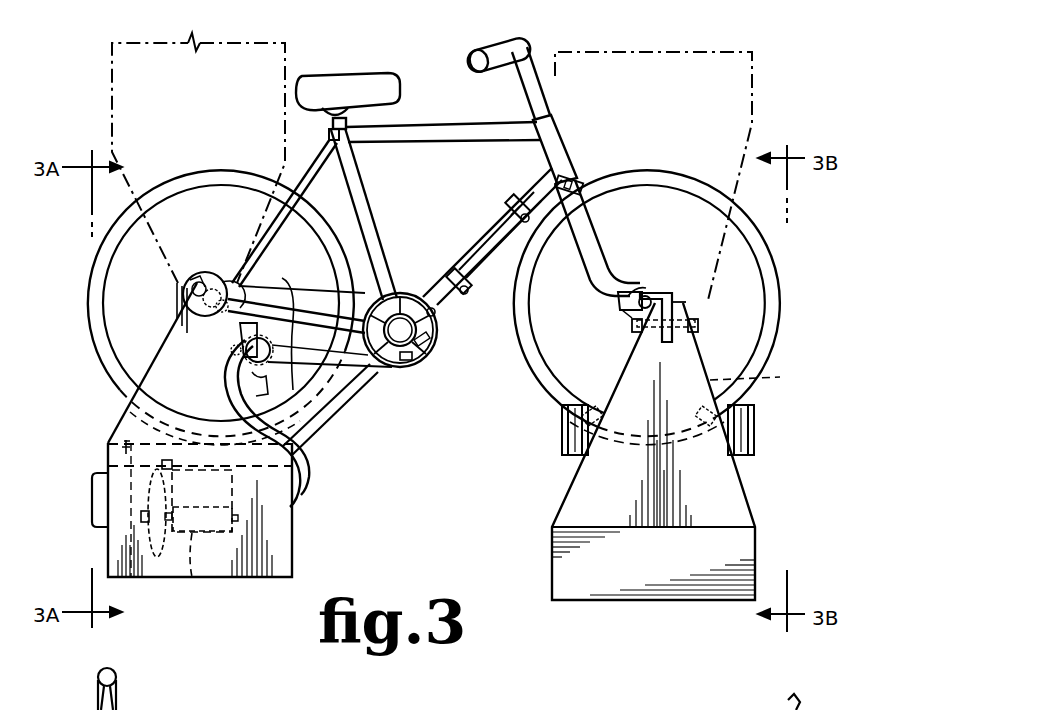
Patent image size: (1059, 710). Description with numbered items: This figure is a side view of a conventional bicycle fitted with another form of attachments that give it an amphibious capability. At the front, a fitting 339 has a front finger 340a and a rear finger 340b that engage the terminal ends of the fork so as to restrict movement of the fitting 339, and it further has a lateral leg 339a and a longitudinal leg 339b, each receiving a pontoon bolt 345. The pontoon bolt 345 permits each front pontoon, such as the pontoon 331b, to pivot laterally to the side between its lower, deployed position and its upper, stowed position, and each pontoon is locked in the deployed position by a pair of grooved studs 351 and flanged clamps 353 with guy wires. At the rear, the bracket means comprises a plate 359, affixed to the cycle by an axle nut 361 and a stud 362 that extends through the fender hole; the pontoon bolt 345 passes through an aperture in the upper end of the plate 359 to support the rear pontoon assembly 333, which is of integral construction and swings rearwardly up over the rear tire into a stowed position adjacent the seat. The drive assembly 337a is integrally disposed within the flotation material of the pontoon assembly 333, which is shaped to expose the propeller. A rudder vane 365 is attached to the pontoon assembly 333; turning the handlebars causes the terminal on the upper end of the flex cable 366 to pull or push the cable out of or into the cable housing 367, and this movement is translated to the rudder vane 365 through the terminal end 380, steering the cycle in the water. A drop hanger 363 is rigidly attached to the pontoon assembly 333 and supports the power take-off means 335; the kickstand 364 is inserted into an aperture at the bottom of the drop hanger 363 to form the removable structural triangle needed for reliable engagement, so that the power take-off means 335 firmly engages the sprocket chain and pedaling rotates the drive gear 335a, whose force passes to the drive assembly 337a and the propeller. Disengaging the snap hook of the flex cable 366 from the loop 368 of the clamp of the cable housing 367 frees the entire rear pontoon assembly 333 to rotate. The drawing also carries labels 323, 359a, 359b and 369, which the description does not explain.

The head tube clamp bracket 323 is at (595, 193).
The pontoon 331b is at (735, 502).
The rear pontoon assembly 333 is at (90, 505).
The power take-off means 335 is at (245, 384).
The drive gear 335a is at (235, 348).
The drive assembly 337a is at (191, 585).
The fitting 339 is at (670, 291).
The lateral leg 339a is at (692, 302).
The longitudinal leg 339b is at (630, 297).
The front finger 340a is at (650, 287).
The rear finger 340b is at (632, 312).
The pontoon bolt 345 is at (180, 297).
The grooved stud 351 is at (760, 428).
The flanged clamp 353 is at (695, 405).
The plate 359 is at (190, 308).
The hub plate 359a is at (190, 288).
The hub link 359b is at (250, 282).
The axle nut 361 is at (233, 280).
The stud 362 is at (217, 283).
The drop hanger 363 is at (242, 404).
The kickstand 364 is at (296, 323).
The conduit 365 is at (325, 435).
The flex cable 366 is at (532, 195).
The cable housing 367 is at (481, 250).
The loop 368 is at (412, 342).
The chain ring 369 is at (440, 326).
The terminal end 380 is at (120, 465).